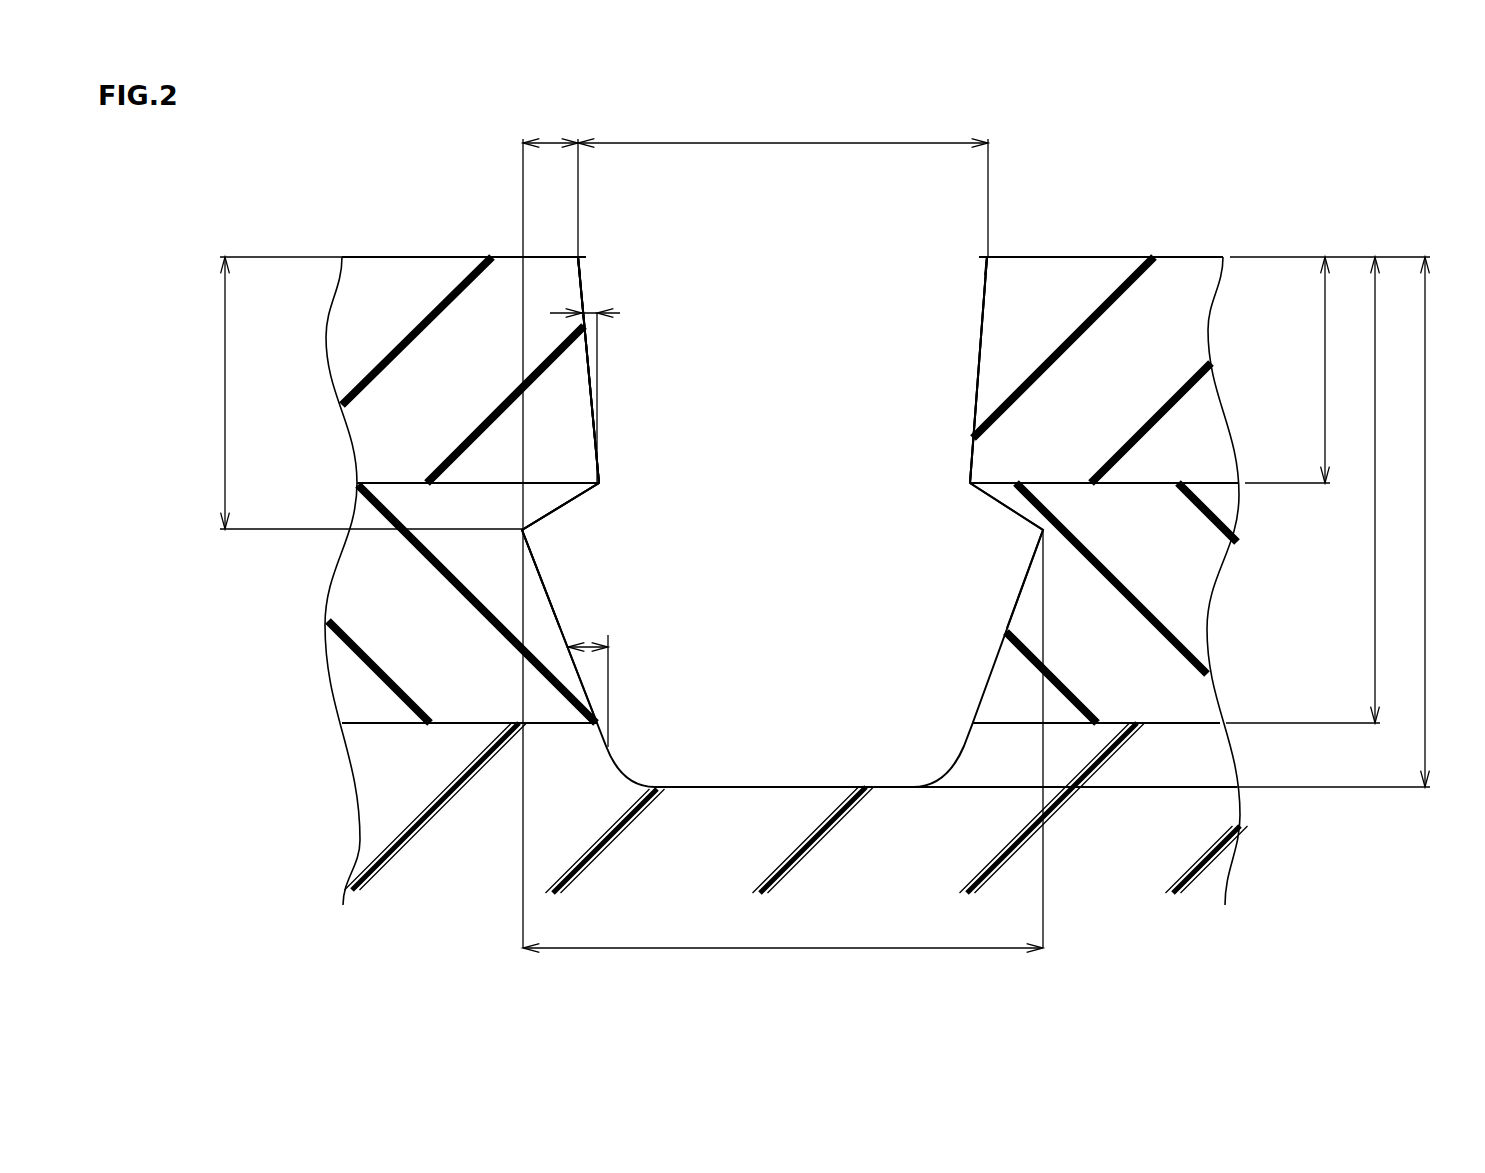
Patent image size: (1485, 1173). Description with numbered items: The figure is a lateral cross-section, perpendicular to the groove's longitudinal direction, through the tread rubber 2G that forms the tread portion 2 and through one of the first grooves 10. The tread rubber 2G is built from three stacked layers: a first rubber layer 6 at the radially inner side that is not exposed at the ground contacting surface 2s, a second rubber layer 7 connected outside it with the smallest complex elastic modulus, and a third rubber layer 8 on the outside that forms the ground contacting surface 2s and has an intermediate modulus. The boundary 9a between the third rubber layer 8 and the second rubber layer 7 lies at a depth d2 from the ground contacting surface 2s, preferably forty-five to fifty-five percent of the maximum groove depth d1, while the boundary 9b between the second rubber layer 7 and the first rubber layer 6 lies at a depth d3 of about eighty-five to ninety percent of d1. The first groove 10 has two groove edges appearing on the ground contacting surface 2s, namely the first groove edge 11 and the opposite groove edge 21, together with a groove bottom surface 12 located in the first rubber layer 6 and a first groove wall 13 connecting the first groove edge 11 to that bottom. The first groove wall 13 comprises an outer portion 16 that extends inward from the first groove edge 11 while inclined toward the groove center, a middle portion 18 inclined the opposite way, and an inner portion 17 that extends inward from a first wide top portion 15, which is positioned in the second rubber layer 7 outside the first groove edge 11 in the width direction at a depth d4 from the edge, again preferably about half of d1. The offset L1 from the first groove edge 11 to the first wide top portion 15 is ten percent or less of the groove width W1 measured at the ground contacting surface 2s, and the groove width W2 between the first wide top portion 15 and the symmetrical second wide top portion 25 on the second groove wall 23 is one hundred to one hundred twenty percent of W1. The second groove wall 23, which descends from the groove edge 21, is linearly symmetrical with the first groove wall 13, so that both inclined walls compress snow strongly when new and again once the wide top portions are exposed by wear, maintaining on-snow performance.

The tread portion 2 is at (1137, 222).
The tread rubber 2G is at (435, 257).
The ground contacting surface 2s is at (1185, 257).
The first rubber layer 6 is at (1167, 830).
The second rubber layer 7 is at (430, 663).
The third rubber layer 8 is at (390, 297).
The boundary between third rubber layer and second rubber layer 9a is at (405, 483).
The boundary between first rubber layer and second rubber layer 9b is at (462, 723).
The first groove 10 is at (790, 300).
The first groove edge 11 is at (578, 257).
The groove bottom surface 12 is at (780, 787).
The first groove wall 13 is at (625, 395).
The first wide top portion 15 is at (522, 530).
The outer portion 16 is at (581, 279).
The inner portion 17 is at (546, 590).
The middle portion 18 is at (573, 506).
The upper edge of groove (second side) 21 is at (987, 257).
The second groove wall 23 is at (942, 445).
The second wide top portion 25 is at (1043, 530).
The distance from first groove edge to first wide top portion L1 is at (550, 529).
The groove width at ground contacting surface W1 is at (783, 183).
The groove width at depth of first wide top portion W2 is at (783, 758).
The maximum depth of first groove d1 is at (1446, 522).
The depth to boundary between third and second rubber layers d2 is at (1345, 370).
The depth to boundary between first and second rubber layers d3 is at (1395, 490).
The depth from first groove edge to first wide top portion d4 is at (351, 393).